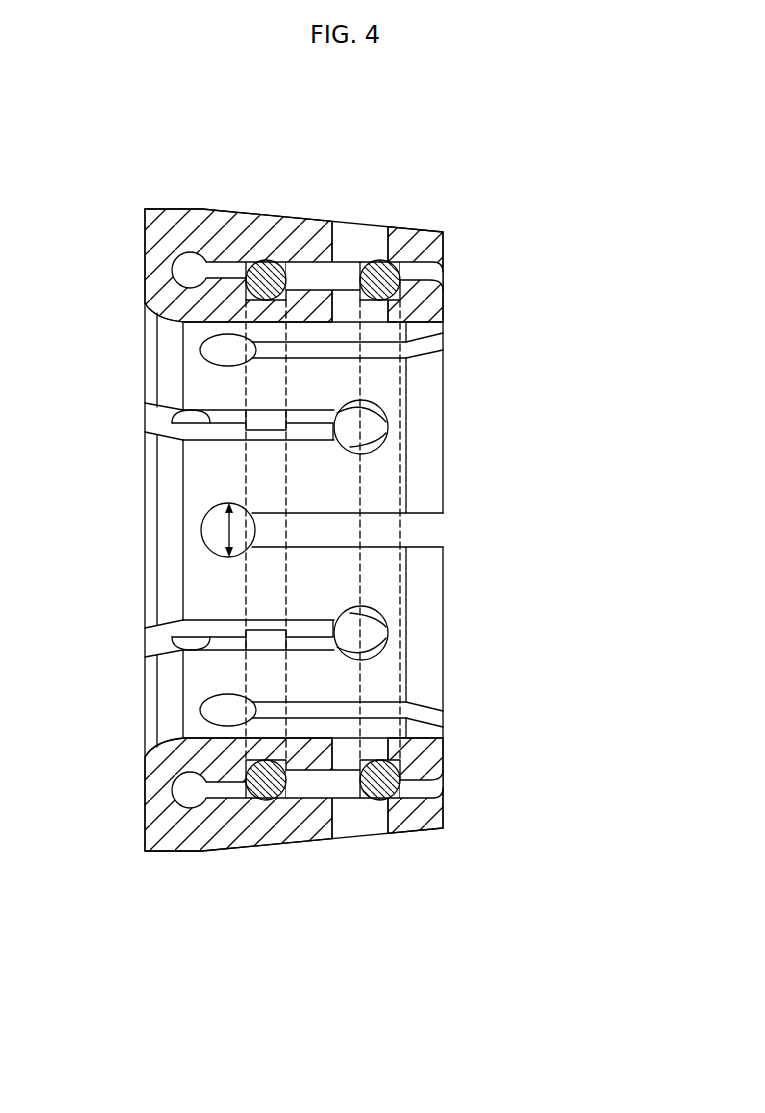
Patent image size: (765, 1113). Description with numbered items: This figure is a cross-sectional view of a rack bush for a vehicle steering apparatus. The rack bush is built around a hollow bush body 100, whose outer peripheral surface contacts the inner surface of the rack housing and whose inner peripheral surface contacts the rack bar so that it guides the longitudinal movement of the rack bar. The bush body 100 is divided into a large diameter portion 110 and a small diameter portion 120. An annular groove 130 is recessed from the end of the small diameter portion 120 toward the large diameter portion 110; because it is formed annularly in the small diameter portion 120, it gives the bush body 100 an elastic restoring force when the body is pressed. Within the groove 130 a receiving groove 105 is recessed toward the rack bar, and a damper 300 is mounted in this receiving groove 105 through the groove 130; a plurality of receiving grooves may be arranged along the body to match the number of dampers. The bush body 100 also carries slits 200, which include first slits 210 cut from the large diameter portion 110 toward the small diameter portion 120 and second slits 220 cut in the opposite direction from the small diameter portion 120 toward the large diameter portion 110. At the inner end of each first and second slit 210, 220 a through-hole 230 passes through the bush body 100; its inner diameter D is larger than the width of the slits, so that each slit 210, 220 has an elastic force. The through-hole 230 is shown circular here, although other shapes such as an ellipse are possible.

The bush body 100 is at (288, 935).
The receiving groove 105 is at (402, 283).
The large diameter portion 110 is at (146, 820).
The small diameter portion 120 is at (445, 828).
The groove 130 is at (147, 715).
The slit 200 is at (398, 535).
The first slit 210 is at (317, 627).
The second slit 220 is at (333, 530).
The through-hole 230 is at (232, 523).
The damper 300 is at (380, 280).
The inner diameter D is at (201, 535).